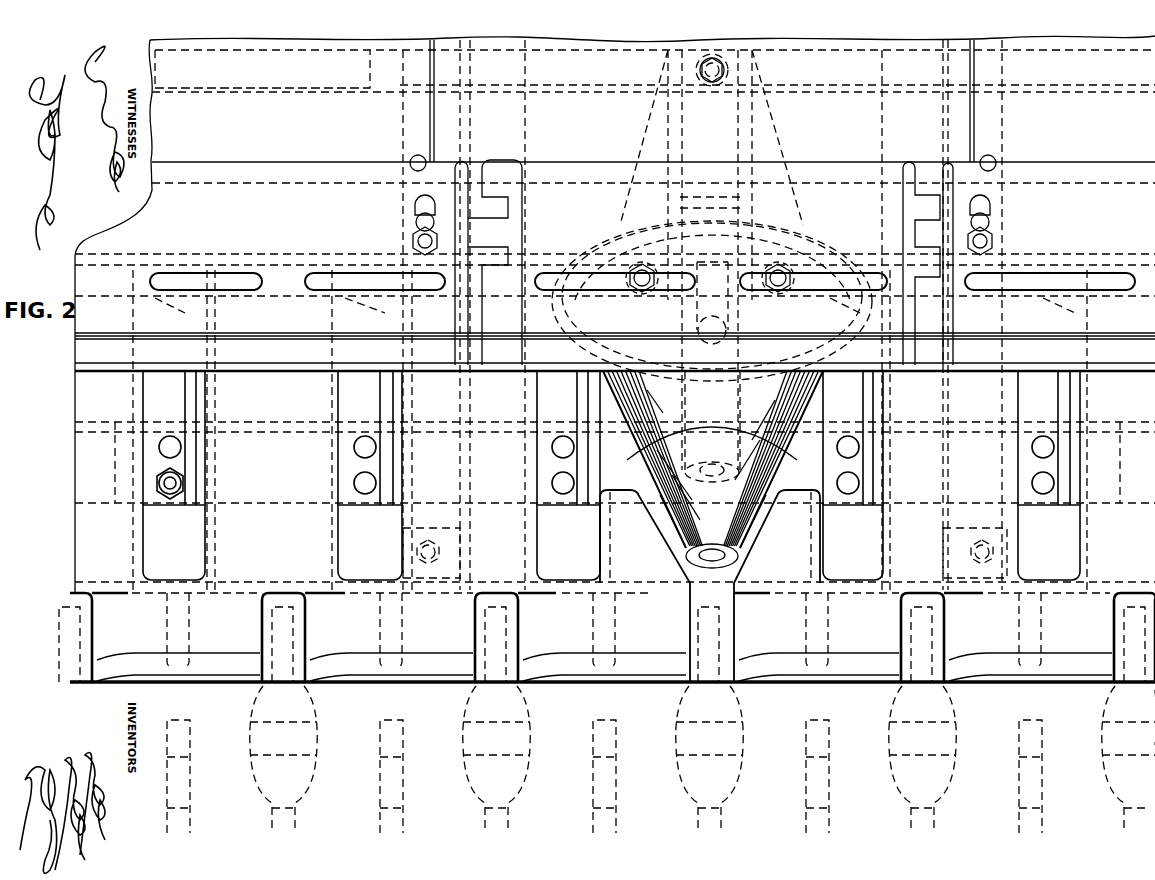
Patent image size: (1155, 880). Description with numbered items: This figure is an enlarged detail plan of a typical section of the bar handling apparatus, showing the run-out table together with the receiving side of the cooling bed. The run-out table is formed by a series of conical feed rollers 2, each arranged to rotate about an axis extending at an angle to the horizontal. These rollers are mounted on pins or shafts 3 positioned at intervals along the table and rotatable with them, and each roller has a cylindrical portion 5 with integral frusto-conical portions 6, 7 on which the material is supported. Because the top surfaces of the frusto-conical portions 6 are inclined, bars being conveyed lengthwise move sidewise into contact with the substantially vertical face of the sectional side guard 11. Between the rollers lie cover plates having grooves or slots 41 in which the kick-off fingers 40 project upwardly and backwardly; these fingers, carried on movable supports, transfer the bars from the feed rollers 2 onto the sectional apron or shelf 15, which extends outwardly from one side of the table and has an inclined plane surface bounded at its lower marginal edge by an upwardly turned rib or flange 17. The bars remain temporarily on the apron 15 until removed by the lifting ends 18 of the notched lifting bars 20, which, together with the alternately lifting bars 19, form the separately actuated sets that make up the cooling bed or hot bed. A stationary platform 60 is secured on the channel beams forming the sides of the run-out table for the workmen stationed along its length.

The stationary platform 60 is at (653, 315).
The sectional side guard 11 is at (1023, 343).
The kick-off fingers 40 is at (615, 438).
The grooves or slots 41 is at (615, 543).
The cylindrical portions 5 is at (617, 322).
The frusto-conical portion 6 is at (606, 396).
The conical feed rollers 2 is at (652, 455).
The frusto-conical portion 7 is at (673, 529).
The pins or shafts 3 is at (720, 556).
The sectional apron or shelf 15 is at (602, 637).
The lifting ends 18 is at (607, 637).
The rib or flange 17 is at (1086, 682).
The lifting bars 19 is at (400, 795).
The notched lifting bars 20 is at (300, 825).